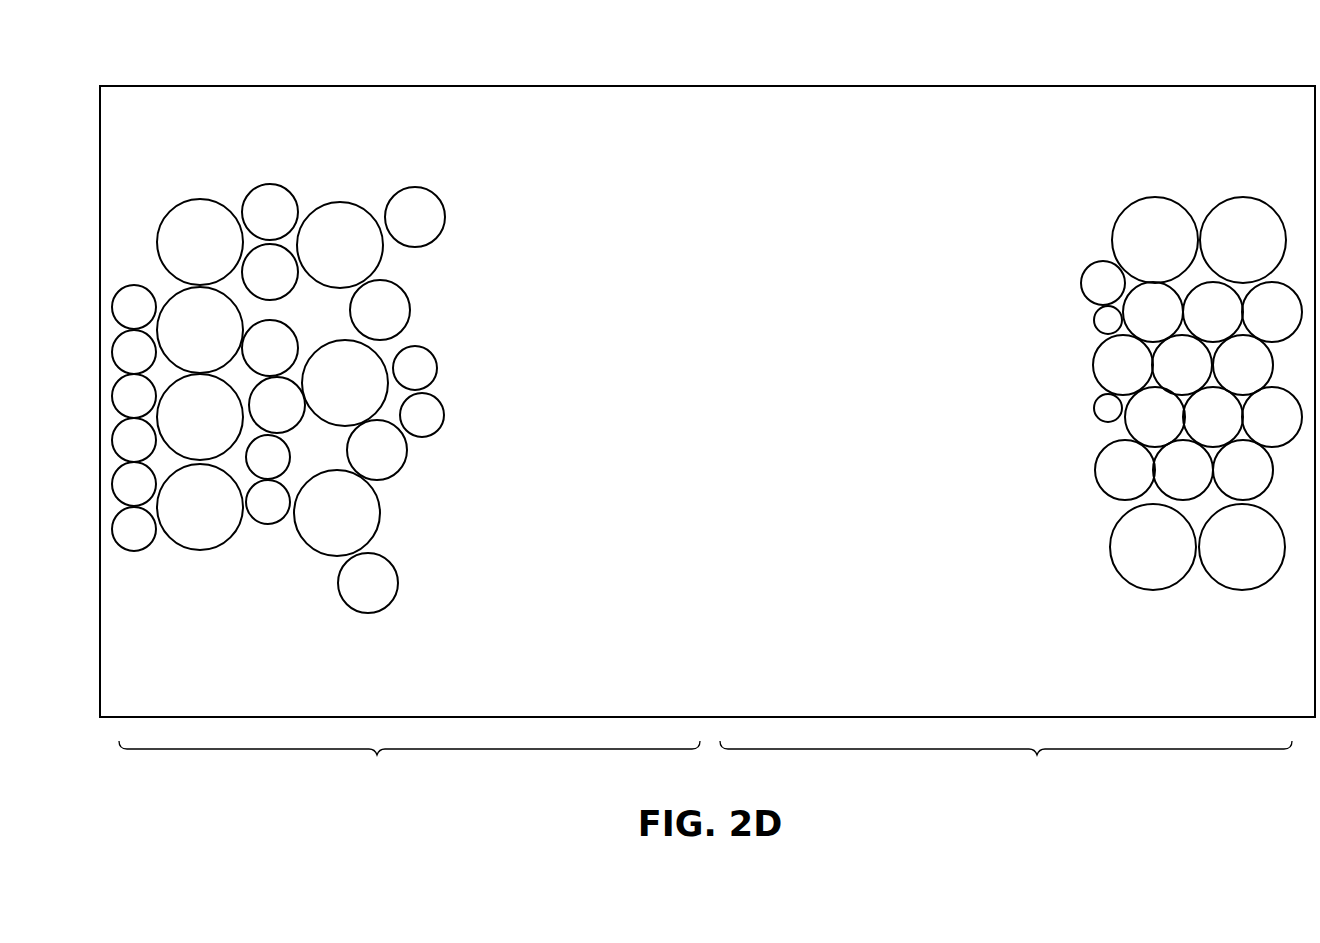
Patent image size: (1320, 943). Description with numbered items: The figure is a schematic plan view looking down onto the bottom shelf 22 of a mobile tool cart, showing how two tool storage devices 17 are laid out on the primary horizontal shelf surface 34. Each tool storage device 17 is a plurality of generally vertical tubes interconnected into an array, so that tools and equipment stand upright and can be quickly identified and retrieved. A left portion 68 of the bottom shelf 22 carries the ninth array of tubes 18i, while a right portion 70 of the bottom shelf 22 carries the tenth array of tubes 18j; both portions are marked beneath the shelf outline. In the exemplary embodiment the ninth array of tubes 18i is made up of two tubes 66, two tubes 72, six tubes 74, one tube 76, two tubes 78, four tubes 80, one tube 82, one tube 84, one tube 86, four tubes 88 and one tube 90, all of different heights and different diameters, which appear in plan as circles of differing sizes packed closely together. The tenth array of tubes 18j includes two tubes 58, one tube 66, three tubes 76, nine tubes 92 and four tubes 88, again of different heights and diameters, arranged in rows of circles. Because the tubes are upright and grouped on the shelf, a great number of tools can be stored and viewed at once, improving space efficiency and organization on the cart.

The bottom shelf 22 is at (103, 78).
The tool storage device 17 is at (263, 172).
The ninth array of tubes 18i is at (202, 188).
The tenth array of tubes 18j is at (1158, 186).
The primary horizontal shelf surface 34 is at (127, 621).
The tube 58 is at (1094, 318).
The tube 66 is at (439, 368).
The left portion 68 is at (409, 765).
The right portion 70 is at (1006, 765).
The tube 72 is at (257, 480).
The tube 74 is at (112, 307).
The tube 76 is at (357, 596).
The tube 78 is at (369, 323).
The tube 80 is at (259, 225).
The tube 82 is at (404, 230).
The tube 84 is at (188, 521).
The tube 86 is at (188, 431).
The tube 88 is at (188, 256).
The tube 90 is at (328, 259).
The tube 92 is at (1112, 378).